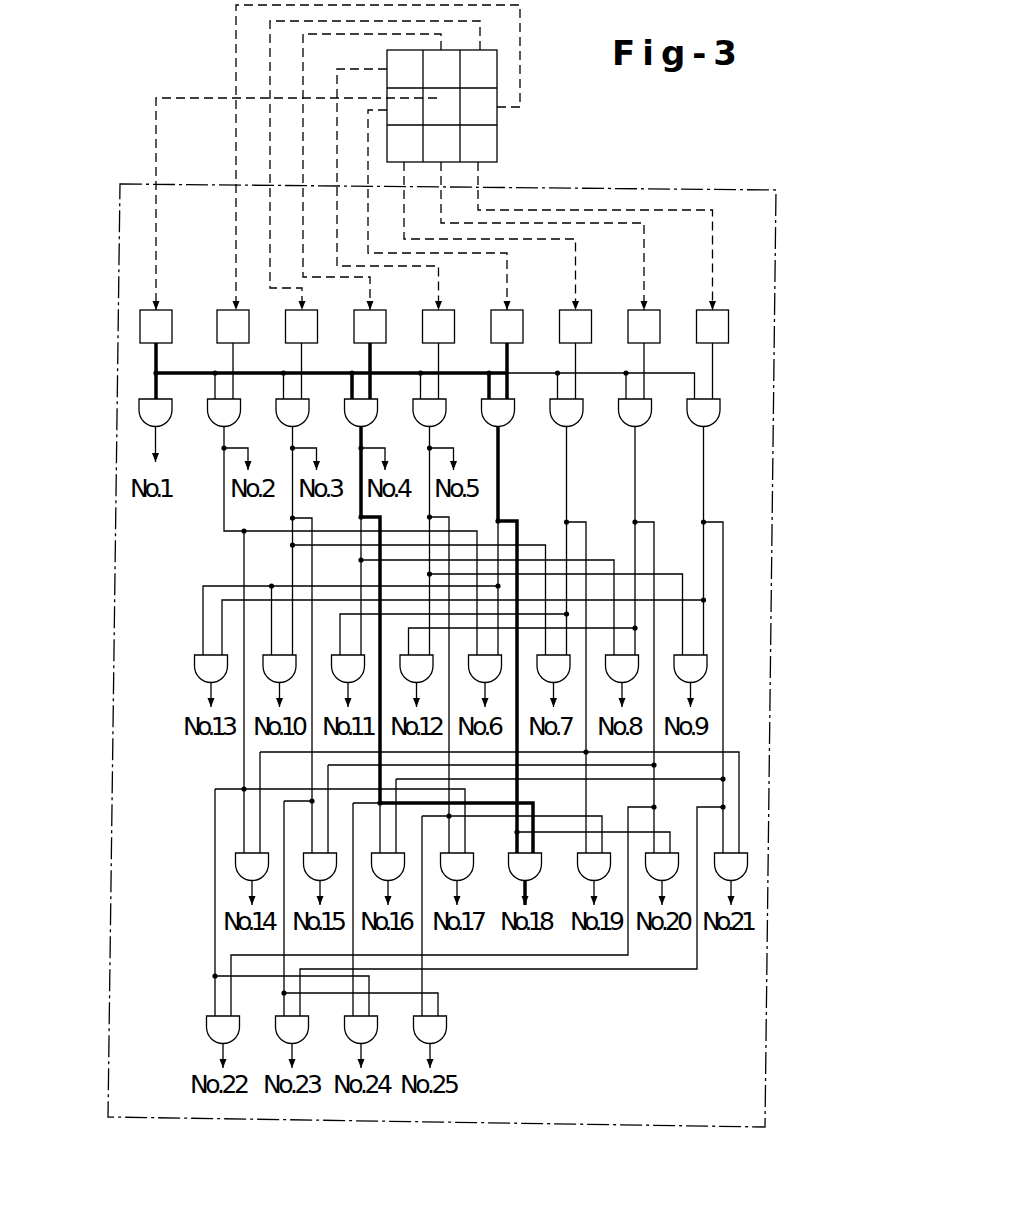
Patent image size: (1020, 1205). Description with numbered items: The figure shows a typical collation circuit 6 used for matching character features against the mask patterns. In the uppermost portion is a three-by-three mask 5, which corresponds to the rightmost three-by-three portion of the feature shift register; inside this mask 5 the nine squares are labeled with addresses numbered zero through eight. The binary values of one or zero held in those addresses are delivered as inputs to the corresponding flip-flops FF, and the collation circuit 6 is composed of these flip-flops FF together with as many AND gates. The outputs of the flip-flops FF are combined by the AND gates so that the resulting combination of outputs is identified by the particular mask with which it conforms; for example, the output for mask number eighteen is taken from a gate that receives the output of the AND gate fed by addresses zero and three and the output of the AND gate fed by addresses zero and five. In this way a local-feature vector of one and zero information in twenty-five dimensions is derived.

The 3×3 mask 5 is at (503, 135).
The collation circuit 6 is at (113, 548).
The flip-flops FF is at (287, 318).